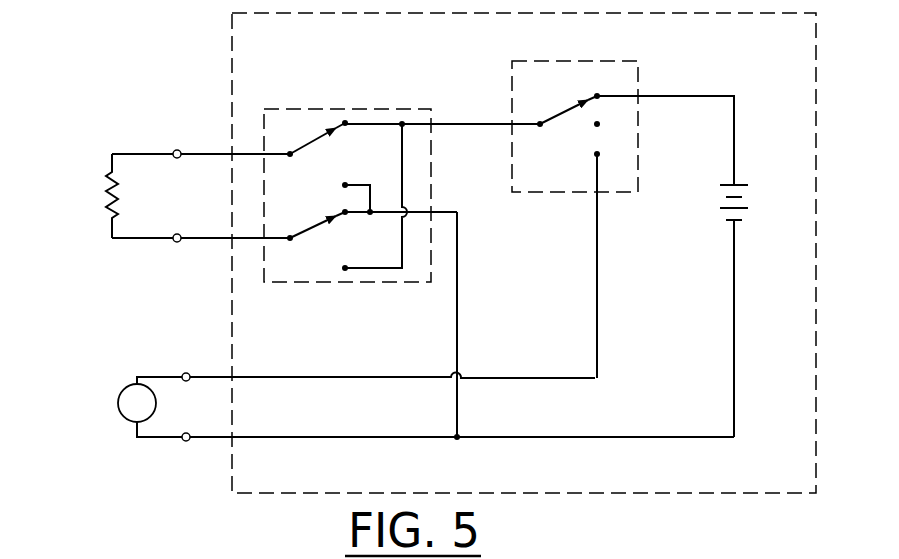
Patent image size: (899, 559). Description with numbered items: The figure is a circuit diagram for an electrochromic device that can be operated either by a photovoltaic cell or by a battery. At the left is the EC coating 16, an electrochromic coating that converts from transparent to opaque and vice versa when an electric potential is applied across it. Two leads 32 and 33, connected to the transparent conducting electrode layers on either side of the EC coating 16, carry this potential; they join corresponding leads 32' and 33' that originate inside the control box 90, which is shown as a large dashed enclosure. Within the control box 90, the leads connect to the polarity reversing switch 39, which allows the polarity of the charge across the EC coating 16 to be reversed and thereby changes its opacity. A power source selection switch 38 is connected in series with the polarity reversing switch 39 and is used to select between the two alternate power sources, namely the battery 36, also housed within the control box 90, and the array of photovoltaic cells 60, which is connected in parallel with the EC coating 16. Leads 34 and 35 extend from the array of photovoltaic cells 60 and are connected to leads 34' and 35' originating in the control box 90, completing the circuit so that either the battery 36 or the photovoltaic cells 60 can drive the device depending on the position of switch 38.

The EC coating 16 is at (107, 197).
The lead 32 is at (131, 261).
The lead 32' is at (227, 259).
The lead 33 is at (131, 132).
The lead 33' is at (227, 134).
The lead 34 is at (137, 362).
The lead 34' is at (415, 361).
The lead 35 is at (138, 448).
The lead 35' is at (488, 432).
The battery 36 is at (745, 184).
The power source selection switch 38 is at (625, 54).
The polarity reversing switch 39 is at (329, 102).
The array of photovoltaic cells 60 is at (117, 407).
The control box 90 is at (228, 46).